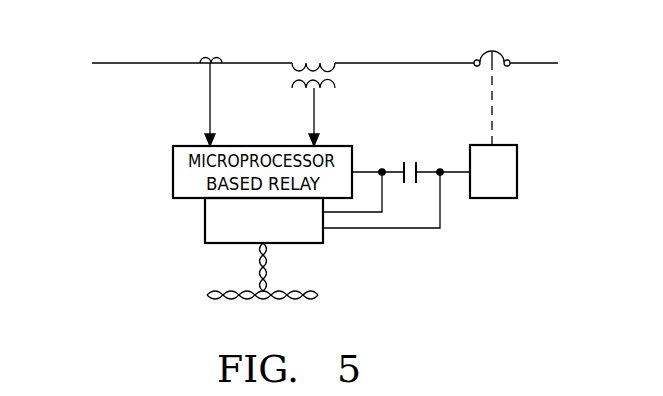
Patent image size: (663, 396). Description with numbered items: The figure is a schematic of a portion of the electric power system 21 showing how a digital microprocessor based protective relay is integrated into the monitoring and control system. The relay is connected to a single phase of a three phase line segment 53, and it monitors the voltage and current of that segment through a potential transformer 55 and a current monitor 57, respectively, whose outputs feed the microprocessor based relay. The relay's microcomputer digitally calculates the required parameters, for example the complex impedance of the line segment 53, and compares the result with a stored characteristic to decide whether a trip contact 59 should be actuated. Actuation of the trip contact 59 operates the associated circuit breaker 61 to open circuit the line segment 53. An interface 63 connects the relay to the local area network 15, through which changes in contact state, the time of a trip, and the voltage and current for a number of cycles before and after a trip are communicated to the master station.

The local area network 15 is at (289, 300).
The electric power system 21 is at (418, 43).
The line segment 53 is at (244, 61).
The potential transformer 55 is at (335, 85).
The current monitor 57 is at (201, 60).
The trip contact 59 is at (416, 162).
The circuit breaker 61 is at (492, 198).
The interface 63 is at (205, 225).